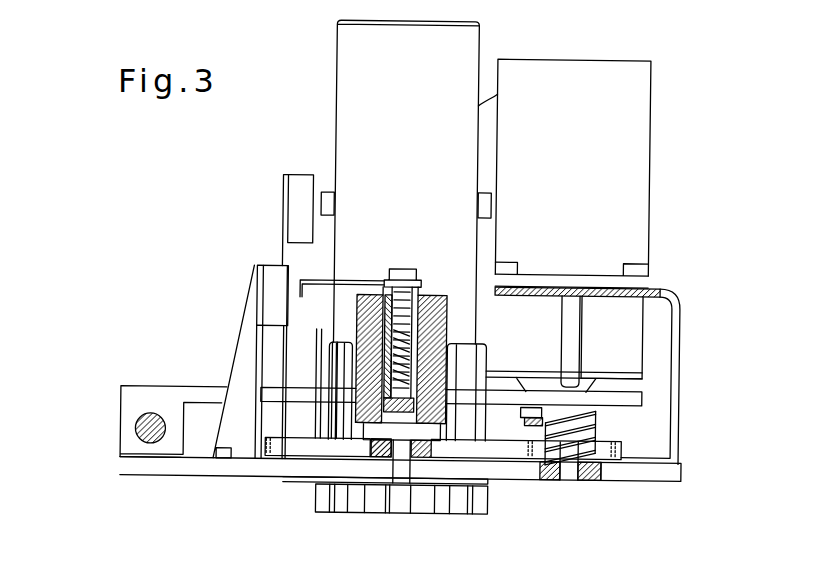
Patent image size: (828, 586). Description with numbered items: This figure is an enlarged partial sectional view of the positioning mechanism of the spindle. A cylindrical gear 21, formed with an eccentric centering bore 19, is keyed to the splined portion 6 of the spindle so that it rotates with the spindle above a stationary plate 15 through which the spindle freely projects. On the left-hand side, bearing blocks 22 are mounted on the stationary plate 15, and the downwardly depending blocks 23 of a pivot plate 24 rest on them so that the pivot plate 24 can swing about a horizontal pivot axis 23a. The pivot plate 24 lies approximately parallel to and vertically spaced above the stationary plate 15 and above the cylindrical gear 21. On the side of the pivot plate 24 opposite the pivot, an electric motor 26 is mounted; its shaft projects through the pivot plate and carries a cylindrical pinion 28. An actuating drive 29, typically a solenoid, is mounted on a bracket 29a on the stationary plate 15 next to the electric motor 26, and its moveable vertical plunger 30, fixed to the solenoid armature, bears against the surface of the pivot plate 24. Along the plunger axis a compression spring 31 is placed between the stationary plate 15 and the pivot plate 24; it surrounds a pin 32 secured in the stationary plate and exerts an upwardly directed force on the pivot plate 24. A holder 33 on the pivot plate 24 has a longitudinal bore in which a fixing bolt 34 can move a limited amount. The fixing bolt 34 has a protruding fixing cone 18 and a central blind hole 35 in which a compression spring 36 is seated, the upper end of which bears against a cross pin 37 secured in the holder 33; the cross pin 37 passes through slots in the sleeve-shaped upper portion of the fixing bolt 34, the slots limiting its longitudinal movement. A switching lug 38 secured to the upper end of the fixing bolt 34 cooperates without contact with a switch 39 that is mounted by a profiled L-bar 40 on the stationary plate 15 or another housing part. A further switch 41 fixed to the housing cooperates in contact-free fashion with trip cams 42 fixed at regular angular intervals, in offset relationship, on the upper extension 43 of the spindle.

The splined portion 6 is at (347, 504).
The stationary plate 15 is at (200, 472).
The fixing cone 18 is at (420, 440).
The eccentric centering bore 19 is at (400, 445).
The cylindrical gear 21 is at (305, 481).
The bearing block 22 is at (125, 458).
The downwardly depending block 23 is at (132, 398).
The horizontal pivot axis 23a is at (150, 430).
The pivot plate 24 is at (218, 392).
The electric motor 26 is at (632, 335).
The cylindrical pinion 28 is at (627, 449).
The actuating drive 29 is at (635, 179).
The bracket 29a is at (670, 285).
The vertical plunger 30 is at (570, 328).
The compression spring 31 is at (587, 411).
The pin 32 is at (570, 445).
The holder 33 is at (358, 319).
The fixing bolt 34 is at (380, 283).
The central blind hole 35 is at (405, 322).
The compression spring 36 is at (393, 380).
The cross pin 37 is at (437, 320).
The switching lug 38 is at (343, 278).
The switch 39 is at (272, 277).
The profiled L-bar 40 is at (257, 347).
The switch 41 is at (292, 194).
The trip cam 42 is at (330, 194).
The upper extension 43 is at (340, 51).